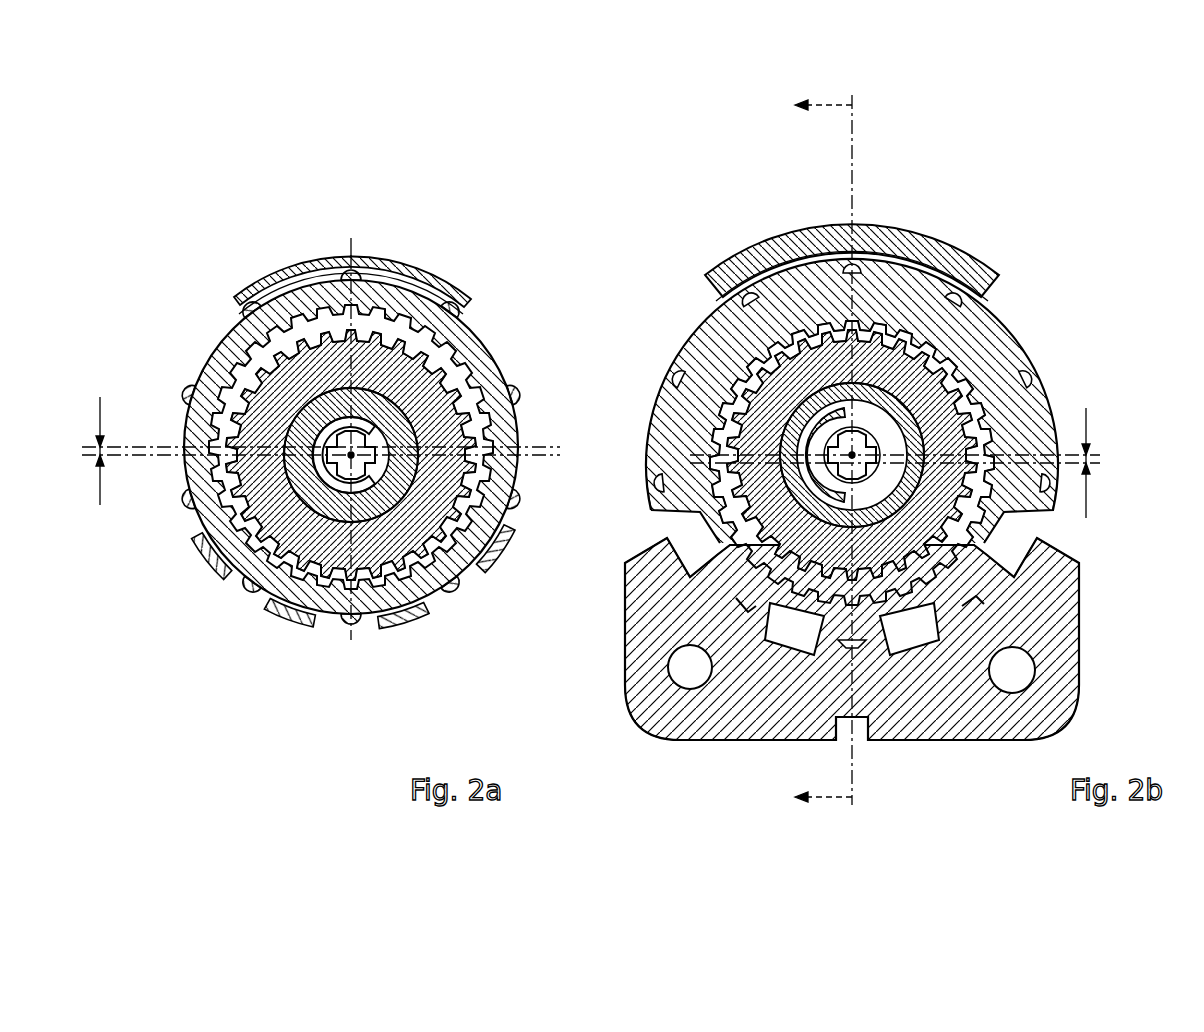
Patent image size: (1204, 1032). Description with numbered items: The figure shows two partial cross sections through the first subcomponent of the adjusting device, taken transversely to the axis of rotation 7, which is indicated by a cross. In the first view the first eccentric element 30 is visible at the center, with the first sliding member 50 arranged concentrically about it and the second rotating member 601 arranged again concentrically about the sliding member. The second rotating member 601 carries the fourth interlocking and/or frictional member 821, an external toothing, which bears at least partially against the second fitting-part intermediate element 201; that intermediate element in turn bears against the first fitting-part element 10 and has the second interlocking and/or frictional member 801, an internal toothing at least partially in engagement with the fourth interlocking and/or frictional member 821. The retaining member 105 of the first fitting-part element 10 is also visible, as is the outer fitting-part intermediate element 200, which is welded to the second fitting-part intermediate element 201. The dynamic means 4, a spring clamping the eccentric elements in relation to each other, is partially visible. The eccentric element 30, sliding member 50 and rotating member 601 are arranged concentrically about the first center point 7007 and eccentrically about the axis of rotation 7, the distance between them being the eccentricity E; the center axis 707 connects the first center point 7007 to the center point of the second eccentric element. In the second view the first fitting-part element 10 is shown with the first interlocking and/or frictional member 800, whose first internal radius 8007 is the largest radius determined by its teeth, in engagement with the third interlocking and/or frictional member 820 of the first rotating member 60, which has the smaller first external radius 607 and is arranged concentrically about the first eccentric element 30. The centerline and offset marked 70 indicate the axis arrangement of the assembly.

In FIG. 2a, the dynamic means 4 is at (346, 432).
In FIG. 2b, the dynamic means 4 is at (800, 448).
In FIG. 2a, the axis of rotation 7 is at (362, 447).
In FIG. 2b, the axis of rotation 7 is at (900, 435).
In FIG. 2b, the first fitting-part element 10 is at (655, 598).
In FIG. 2a, the first eccentric element 30 is at (300, 480).
In FIG. 2b, the first eccentric element 30 is at (945, 440).
In FIG. 2a, the first sliding member 50 is at (328, 410).
In FIG. 2b, the first sliding member 50 is at (762, 447).
In FIG. 2b, the first rotating member 60 is at (762, 467).
In FIG. 2a, the axis of rotation 70 is at (145, 447).
In FIG. 2b, the axis of rotation 70 is at (1097, 470).
In FIG. 2a, the retaining member 105 is at (470, 608).
In FIG. 2b, the retaining member 105 is at (848, 648).
In FIG. 2a, the outer fitting-part intermediate element 200 is at (422, 270).
In FIG. 2b, the outer fitting-part intermediate element 200 is at (905, 243).
In FIG. 2a, the second fitting-part intermediate element 201 is at (330, 602).
In FIG. 2a, the second rotating member 601 is at (262, 415).
In FIG. 2b, the first external radius 607 is at (800, 440).
In FIG. 2a, the center axis 707 is at (355, 242).
In FIG. 2b, the center axis 707 is at (860, 208).
In FIG. 2b, the first interlocking and/or frictional member 800 is at (770, 548).
In FIG. 2a, the second interlocking and/or frictional member 801 is at (275, 578).
In FIG. 2b, the third interlocking and/or frictional member 820 is at (775, 532).
In FIG. 2a, the fourth interlocking and/or frictional member 821 is at (248, 538).
In FIG. 2a, the first center point 7007 is at (372, 462).
In FIG. 2b, the first center point 7007 is at (905, 505).
In FIG. 2b, the first internal radius 8007 is at (850, 452).
In FIG. 2a, the eccentricity E is at (100, 488).
In FIG. 2b, the eccentricity E is at (1090, 446).